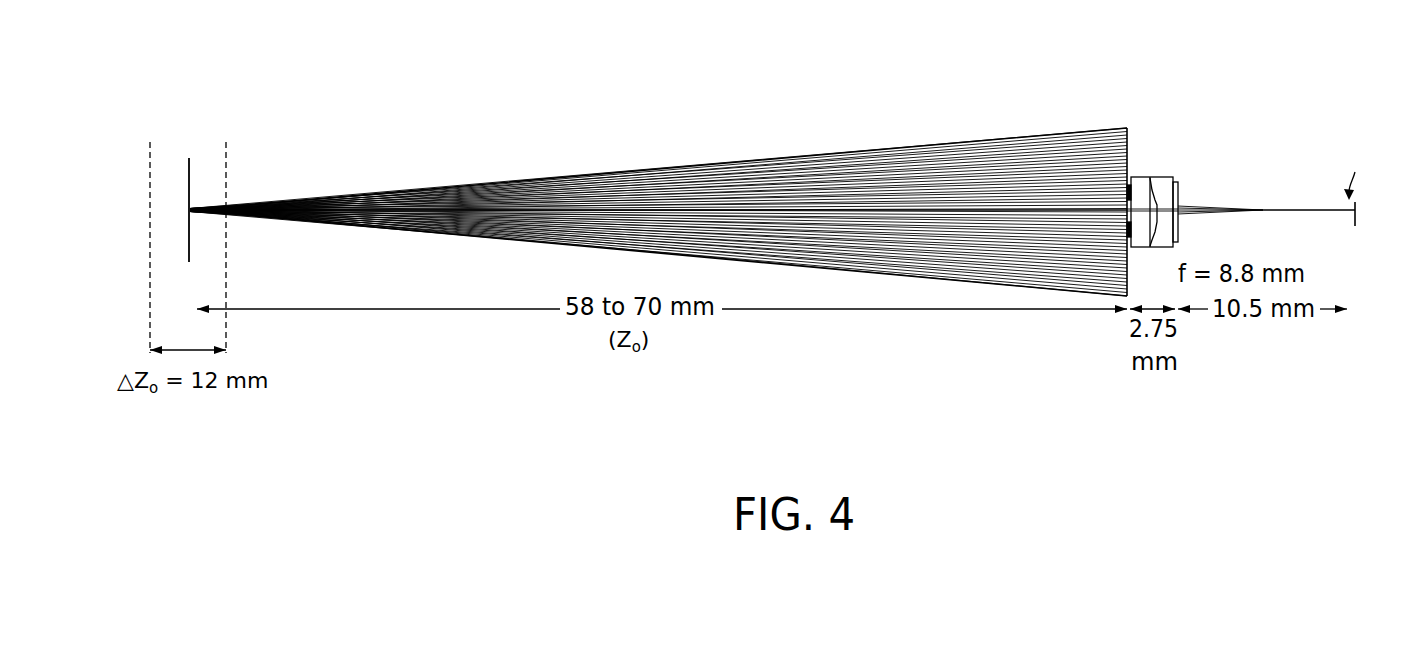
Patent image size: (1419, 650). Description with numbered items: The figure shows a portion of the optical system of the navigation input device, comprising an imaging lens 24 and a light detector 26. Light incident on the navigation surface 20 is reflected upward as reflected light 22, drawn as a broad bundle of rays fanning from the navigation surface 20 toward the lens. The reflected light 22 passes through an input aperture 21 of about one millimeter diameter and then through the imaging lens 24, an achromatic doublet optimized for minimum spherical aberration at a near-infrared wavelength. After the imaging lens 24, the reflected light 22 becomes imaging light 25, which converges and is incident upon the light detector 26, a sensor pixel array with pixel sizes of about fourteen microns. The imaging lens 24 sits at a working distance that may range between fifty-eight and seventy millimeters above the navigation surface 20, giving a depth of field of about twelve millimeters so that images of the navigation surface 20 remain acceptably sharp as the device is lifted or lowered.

The navigation surface 20 is at (189, 235).
The aperture 21 is at (1136, 170).
The reflected light 22 is at (662, 149).
The imaging lens 24 is at (1217, 166).
The imaging light 25 is at (1263, 212).
The light detector 26 is at (1356, 211).